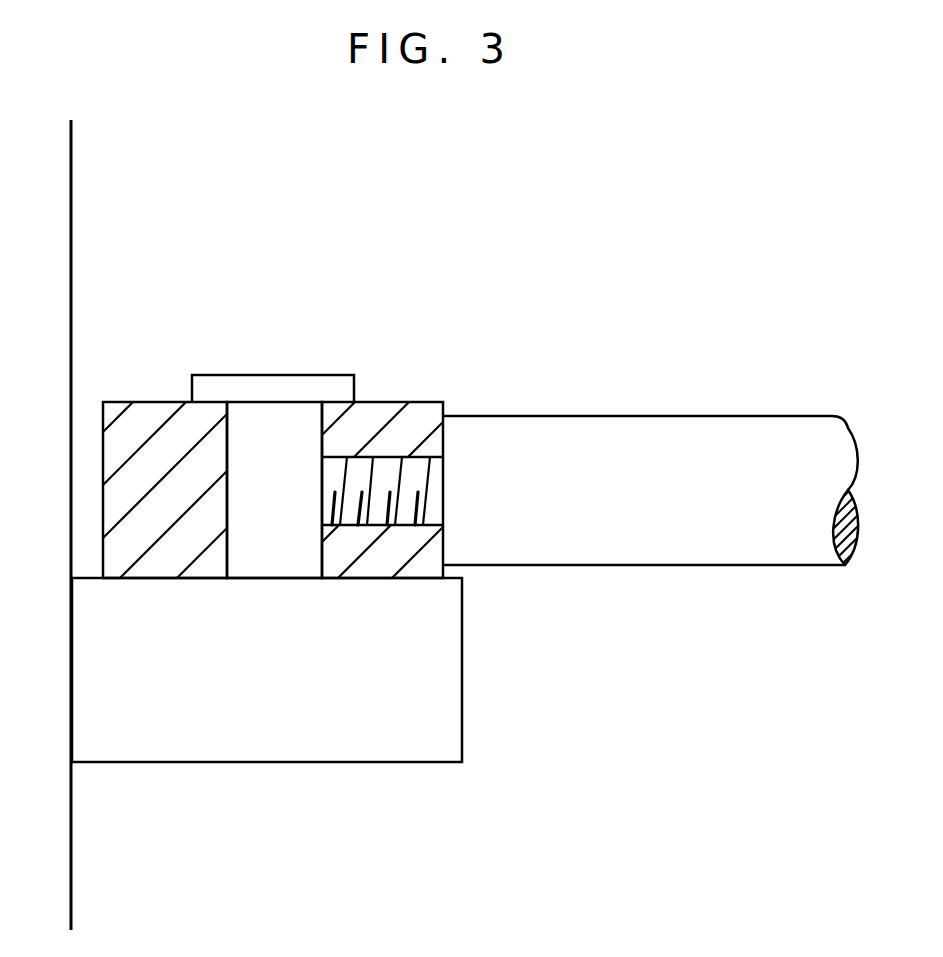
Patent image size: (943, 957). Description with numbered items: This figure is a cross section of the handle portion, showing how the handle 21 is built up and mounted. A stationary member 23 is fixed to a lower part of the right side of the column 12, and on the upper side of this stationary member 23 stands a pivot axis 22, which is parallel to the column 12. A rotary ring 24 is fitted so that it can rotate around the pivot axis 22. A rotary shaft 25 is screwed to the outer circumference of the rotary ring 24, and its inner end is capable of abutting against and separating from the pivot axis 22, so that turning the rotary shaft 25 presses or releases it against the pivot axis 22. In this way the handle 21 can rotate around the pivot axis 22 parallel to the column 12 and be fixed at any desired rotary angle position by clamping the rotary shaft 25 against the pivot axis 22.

The column 12 is at (52, 198).
The handle 21 is at (716, 258).
The pivot axis 22 is at (292, 412).
The stationary member 23 is at (360, 748).
The rotary ring 24 is at (425, 408).
The rotary shaft 25 is at (713, 430).